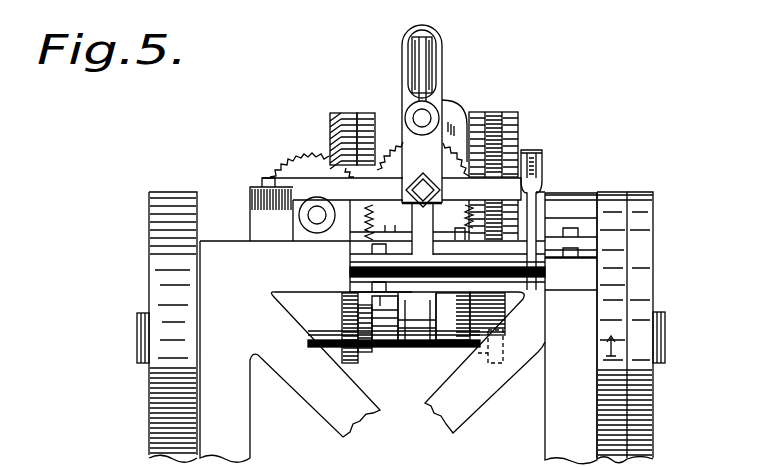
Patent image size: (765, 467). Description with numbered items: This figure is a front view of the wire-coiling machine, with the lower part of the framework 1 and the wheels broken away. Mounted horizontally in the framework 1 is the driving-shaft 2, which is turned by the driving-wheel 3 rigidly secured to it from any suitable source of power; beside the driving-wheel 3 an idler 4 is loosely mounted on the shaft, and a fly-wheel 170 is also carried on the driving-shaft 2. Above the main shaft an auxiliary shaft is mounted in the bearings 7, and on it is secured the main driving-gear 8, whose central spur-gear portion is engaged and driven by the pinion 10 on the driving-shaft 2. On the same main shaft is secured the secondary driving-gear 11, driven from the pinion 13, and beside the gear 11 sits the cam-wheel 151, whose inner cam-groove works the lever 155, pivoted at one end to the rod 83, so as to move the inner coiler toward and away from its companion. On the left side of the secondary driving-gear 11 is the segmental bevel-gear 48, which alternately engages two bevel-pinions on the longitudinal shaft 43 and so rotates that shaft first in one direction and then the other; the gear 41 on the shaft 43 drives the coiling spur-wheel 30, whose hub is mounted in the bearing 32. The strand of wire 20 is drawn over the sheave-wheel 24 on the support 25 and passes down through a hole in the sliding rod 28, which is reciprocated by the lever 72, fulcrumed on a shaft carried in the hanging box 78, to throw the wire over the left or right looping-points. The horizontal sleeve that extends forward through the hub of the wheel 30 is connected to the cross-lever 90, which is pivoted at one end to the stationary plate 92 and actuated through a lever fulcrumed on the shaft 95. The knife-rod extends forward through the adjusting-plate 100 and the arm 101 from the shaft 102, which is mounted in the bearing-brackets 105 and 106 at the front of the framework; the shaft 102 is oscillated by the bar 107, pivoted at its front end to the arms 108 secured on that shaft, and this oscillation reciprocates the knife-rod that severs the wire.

The framework 1 is at (398, 328).
The driving-shaft 2 is at (318, 331).
The driving-wheel 3 is at (612, 327).
The idler 4 is at (631, 325).
The bearings 7 is at (587, 196).
The main driving-gear 8 is at (499, 113).
The pinion 10 is at (512, 320).
The secondary driving-gear 11 is at (347, 112).
The pinion 13 is at (352, 361).
The strand of wire 20 is at (436, 32).
The sheave-wheel 24 is at (410, 50).
The support 25 is at (443, 46).
The rod 28 is at (437, 108).
The spur-wheel 30 is at (393, 156).
The bearing 32 is at (422, 172).
The gear 41 is at (287, 176).
The shaft 43 is at (313, 224).
The segmental bevel-gear 48 is at (330, 129).
The lever 72 is at (457, 119).
The hanging box 78 is at (427, 350).
The rod 83 is at (402, 330).
The cross-lever 90 is at (391, 189).
The stationary plate 92 is at (271, 209).
The shaft 95 is at (499, 327).
The adjusting-plate 100 is at (441, 195).
The arm 101 is at (423, 229).
The shaft 102 is at (527, 283).
The bearing-bracket 105 is at (350, 268).
The bearing-bracket 106 is at (580, 291).
The bar 107 is at (536, 151).
The arms 108 is at (541, 190).
The cam-wheel 151 is at (365, 112).
The lever 155 is at (386, 348).
The fly-wheel 170 is at (167, 327).